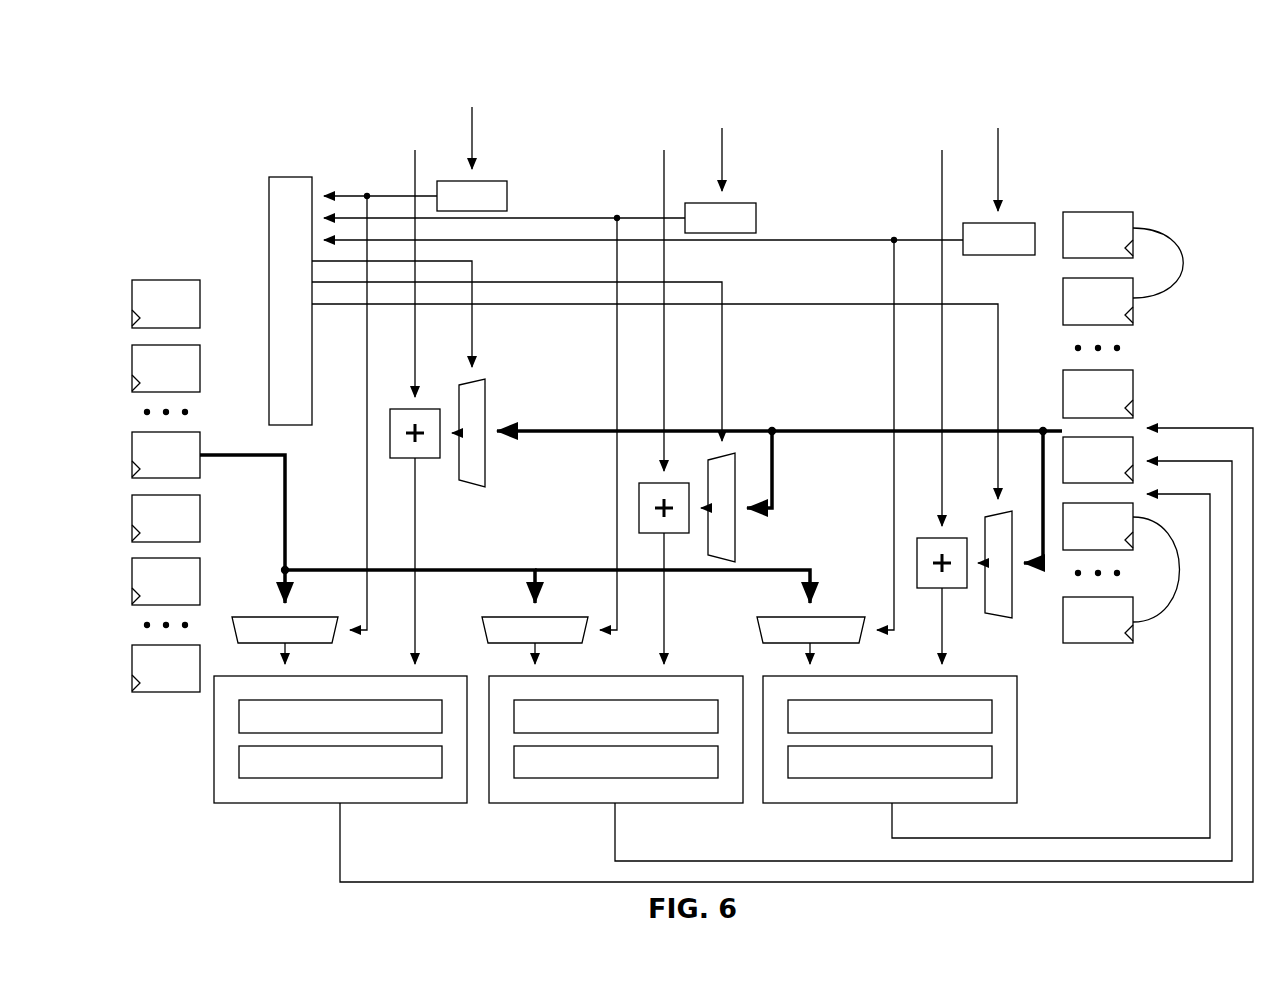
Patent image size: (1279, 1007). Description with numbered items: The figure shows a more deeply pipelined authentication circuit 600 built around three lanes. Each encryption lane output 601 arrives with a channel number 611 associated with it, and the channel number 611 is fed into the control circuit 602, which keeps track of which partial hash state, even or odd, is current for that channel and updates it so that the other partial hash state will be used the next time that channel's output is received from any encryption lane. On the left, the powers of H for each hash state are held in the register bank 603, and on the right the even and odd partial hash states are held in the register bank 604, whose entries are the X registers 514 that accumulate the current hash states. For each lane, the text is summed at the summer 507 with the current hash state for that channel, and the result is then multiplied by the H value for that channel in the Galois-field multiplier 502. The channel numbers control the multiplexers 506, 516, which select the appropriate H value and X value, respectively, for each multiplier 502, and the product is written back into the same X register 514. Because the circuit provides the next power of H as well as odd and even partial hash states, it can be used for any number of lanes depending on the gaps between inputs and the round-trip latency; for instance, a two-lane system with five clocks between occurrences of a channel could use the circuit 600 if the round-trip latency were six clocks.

The authentication circuit 600 is at (205, 120).
The encryption lane output 601 is at (414, 178).
The control circuit 602 is at (295, 177).
The register bank 603 is at (182, 265).
The register bank 604 is at (1126, 198).
The channel number 611 is at (474, 145).
The X register 514 is at (1135, 462).
The summer 507 is at (388, 433).
The multiplexer 506 is at (487, 392).
The multiplexer 516 is at (300, 616).
The Galois-field multiplier 502 is at (420, 805).